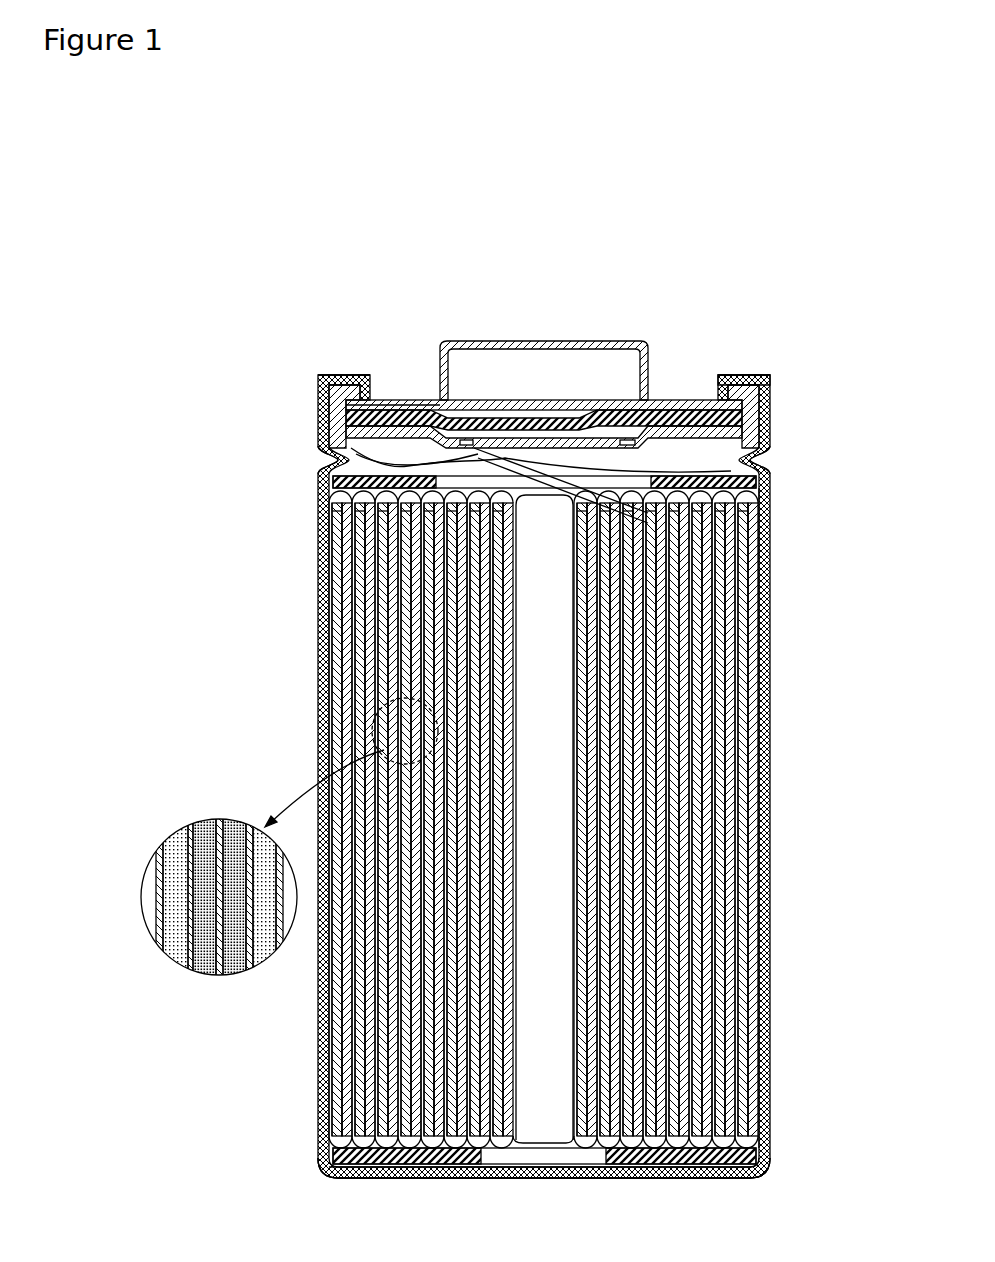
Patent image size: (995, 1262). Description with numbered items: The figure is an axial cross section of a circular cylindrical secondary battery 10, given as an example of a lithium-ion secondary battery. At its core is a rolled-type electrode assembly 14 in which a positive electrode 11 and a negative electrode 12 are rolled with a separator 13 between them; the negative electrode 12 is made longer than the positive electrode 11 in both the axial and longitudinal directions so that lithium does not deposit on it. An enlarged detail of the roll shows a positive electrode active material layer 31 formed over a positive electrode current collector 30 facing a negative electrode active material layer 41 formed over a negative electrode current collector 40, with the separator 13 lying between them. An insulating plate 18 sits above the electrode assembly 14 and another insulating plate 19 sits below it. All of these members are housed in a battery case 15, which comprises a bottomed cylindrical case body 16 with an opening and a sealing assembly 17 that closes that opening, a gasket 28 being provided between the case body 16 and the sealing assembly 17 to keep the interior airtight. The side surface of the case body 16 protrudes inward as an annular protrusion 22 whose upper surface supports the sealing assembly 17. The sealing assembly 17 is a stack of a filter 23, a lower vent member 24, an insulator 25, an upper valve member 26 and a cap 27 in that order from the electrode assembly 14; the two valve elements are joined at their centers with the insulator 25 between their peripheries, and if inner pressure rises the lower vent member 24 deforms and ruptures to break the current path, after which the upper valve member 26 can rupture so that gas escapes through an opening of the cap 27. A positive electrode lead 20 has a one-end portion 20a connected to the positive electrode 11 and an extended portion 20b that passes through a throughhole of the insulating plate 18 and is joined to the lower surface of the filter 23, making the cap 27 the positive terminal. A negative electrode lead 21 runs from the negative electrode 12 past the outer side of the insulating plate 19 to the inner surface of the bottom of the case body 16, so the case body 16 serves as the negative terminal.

The secondary battery 10 is at (770, 216).
The positive electrode 11 is at (733, 874).
The negative electrode 12 is at (742, 900).
The separator 13 is at (735, 930).
The electrode assembly 14 is at (820, 862).
The battery case 15 is at (658, 284).
The case body 16 is at (735, 365).
The sealing assembly 17 is at (668, 390).
The insulating plate 18 is at (748, 474).
The insulating plate 19 is at (762, 1160).
The positive electrode lead 20 is at (310, 428).
The one-end portion 20a is at (740, 520).
The extended portion 20b is at (745, 455).
The negative electrode lead 21 is at (313, 1140).
The protrusion 22 is at (315, 456).
The filter 23 is at (538, 425).
The lower vent member 24 is at (447, 392).
The insulator 25 is at (382, 392).
The upper valve member 26 is at (468, 400).
The cap 27 is at (604, 333).
The gasket 28 is at (762, 384).
The positive electrode current collector 30 is at (213, 812).
The positive electrode active material layer 31 is at (230, 813).
The negative electrode current collector 40 is at (150, 840).
The negative electrode active material layer 41 is at (165, 820).